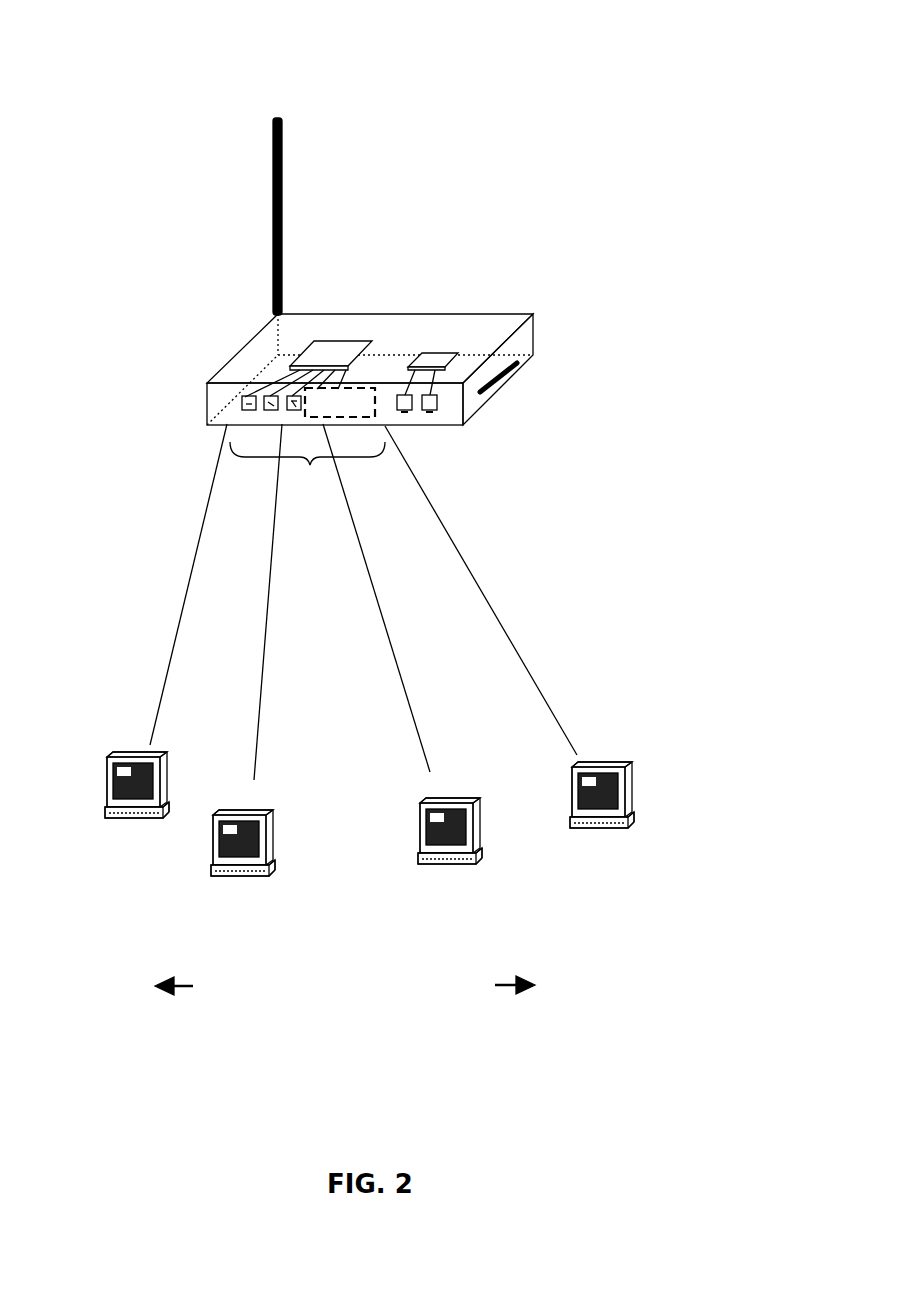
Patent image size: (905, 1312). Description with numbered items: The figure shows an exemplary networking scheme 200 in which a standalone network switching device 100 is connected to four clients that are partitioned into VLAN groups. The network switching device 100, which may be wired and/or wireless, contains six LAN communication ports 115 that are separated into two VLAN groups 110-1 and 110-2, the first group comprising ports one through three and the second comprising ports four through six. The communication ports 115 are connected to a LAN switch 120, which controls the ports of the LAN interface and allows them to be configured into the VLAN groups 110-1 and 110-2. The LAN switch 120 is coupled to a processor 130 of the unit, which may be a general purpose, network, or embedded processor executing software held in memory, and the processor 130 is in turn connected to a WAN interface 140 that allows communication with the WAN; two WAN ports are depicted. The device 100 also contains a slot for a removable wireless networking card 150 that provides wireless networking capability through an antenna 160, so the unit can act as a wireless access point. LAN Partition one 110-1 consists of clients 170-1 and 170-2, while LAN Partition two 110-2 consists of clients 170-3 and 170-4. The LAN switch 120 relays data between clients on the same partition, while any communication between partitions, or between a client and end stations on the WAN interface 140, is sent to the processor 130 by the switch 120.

The networking scheme 200 is at (96, 37).
The network switching device 100 is at (207, 405).
The communication ports 115 is at (250, 400).
The LAN switch 120 is at (332, 352).
The processor 130 is at (440, 354).
The WAN interface 140 is at (466, 404).
The wireless networking card 150 is at (530, 353).
The antenna 160 is at (285, 127).
The VLAN group 110-1 is at (253, 400).
The VLAN group 110-2 is at (378, 410).
The client 170-1 is at (164, 657).
The client 170-2 is at (245, 684).
The client 170-3 is at (406, 680).
The client 170-4 is at (514, 663).